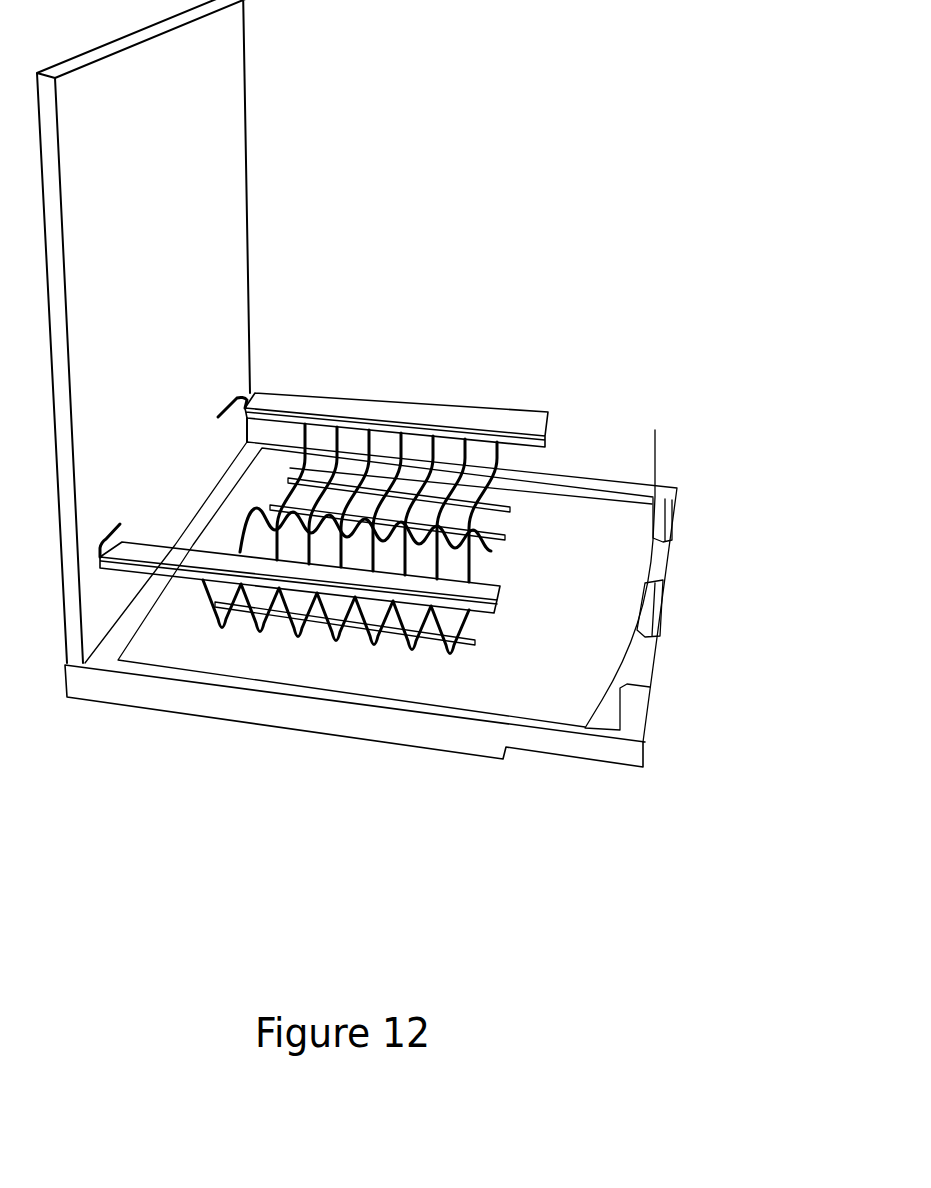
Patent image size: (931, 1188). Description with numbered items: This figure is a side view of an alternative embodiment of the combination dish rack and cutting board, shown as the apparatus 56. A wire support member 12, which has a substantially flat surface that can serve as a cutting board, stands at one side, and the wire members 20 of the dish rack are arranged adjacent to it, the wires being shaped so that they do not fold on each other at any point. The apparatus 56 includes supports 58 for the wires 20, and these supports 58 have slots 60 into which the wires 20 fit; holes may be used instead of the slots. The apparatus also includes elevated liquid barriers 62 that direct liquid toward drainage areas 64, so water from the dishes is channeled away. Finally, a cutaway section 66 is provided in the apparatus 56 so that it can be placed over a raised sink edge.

The wire support member 12 is at (205, 220).
The wire members 20 is at (300, 548).
The apparatus 56 is at (547, 332).
The supports 58 is at (476, 641).
The slots 60 is at (366, 640).
The elevated liquid barriers 62 is at (573, 480).
The drainage areas 64 is at (645, 667).
The cutaway section 66 is at (548, 760).